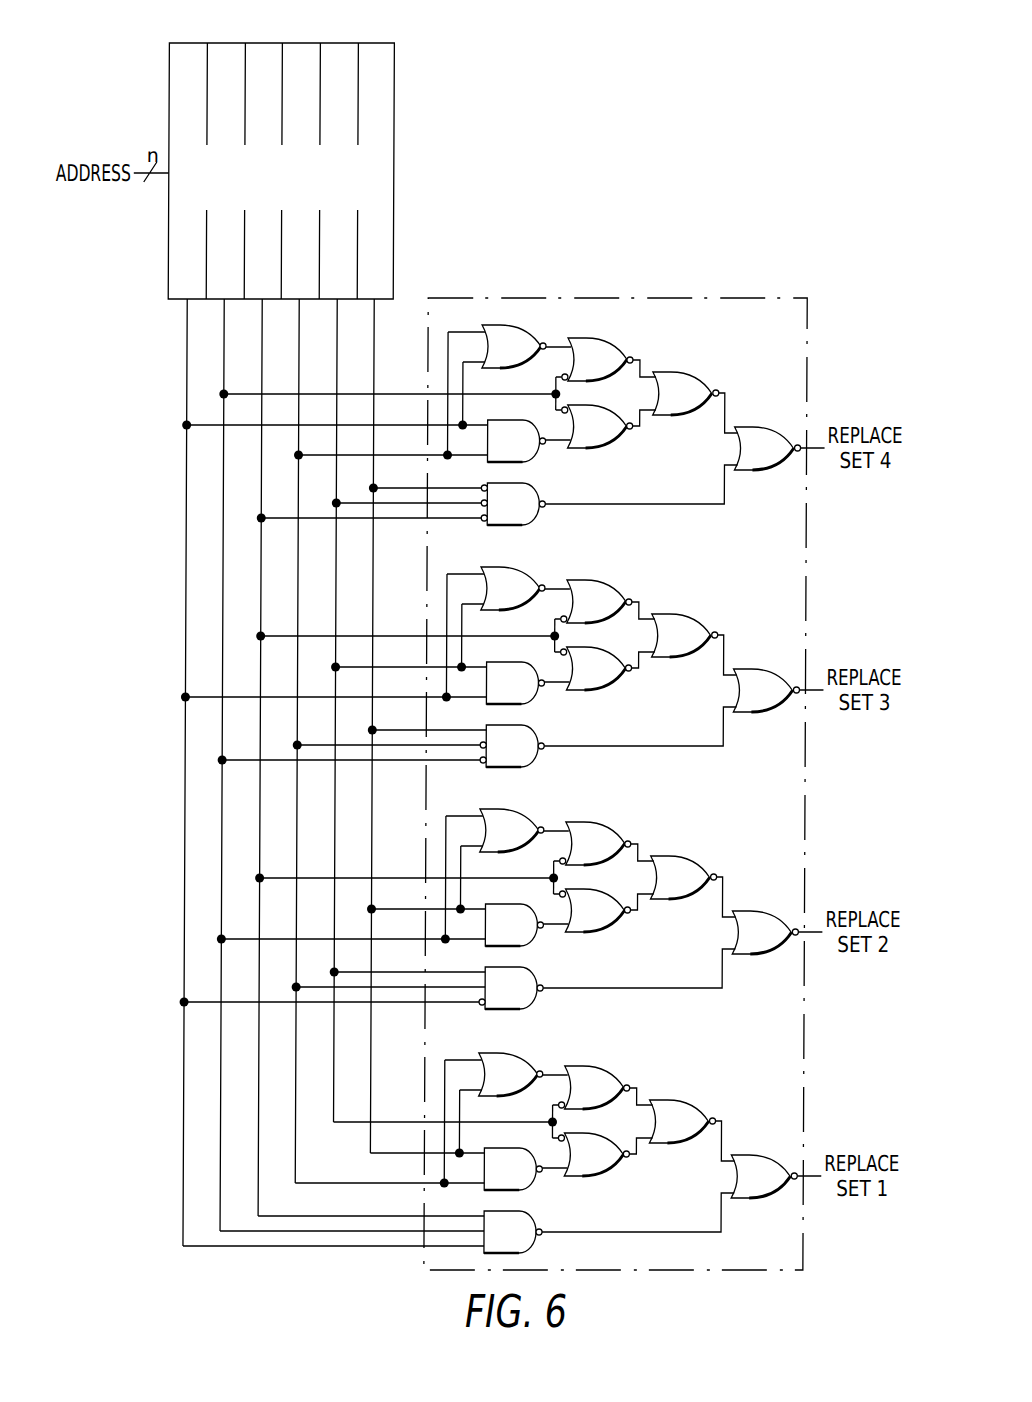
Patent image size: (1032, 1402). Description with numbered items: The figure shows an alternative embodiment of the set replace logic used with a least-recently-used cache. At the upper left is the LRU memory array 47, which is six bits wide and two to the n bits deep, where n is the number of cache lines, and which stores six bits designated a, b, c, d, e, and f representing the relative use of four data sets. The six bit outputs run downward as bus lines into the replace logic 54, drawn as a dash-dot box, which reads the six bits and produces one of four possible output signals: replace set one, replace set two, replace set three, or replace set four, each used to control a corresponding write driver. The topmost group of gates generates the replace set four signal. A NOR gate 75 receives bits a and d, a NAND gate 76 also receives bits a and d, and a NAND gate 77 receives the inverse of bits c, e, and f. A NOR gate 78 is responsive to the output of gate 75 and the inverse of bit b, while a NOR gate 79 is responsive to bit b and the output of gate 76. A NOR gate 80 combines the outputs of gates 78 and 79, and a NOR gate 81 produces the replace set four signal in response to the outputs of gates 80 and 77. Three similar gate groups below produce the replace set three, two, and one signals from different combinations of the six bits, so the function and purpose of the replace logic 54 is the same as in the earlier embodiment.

The LRU memory array 47 is at (395, 60).
The replace logic 54 is at (716, 290).
The NOR gate 75 is at (531, 316).
The NAND gate 76 is at (534, 457).
The NAND gate 77 is at (534, 522).
The NOR gate 78 is at (620, 325).
The NOR gate 79 is at (620, 440).
The NOR gate 80 is at (694, 372).
The NOR gate 81 is at (760, 471).